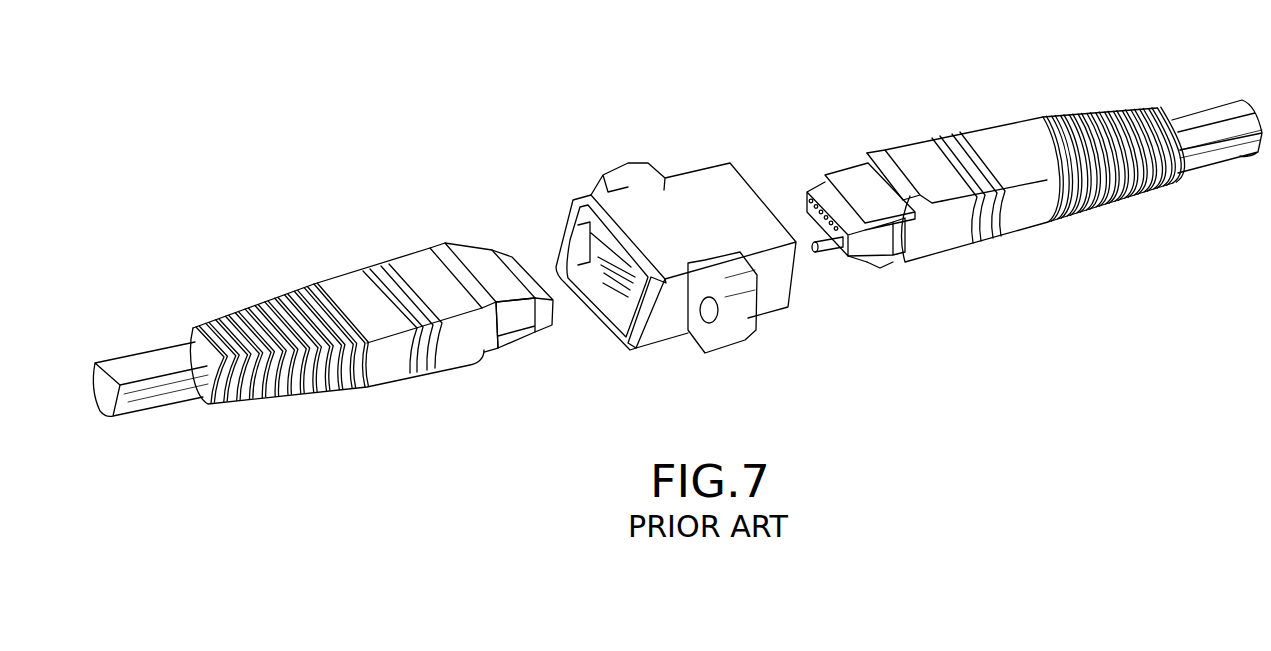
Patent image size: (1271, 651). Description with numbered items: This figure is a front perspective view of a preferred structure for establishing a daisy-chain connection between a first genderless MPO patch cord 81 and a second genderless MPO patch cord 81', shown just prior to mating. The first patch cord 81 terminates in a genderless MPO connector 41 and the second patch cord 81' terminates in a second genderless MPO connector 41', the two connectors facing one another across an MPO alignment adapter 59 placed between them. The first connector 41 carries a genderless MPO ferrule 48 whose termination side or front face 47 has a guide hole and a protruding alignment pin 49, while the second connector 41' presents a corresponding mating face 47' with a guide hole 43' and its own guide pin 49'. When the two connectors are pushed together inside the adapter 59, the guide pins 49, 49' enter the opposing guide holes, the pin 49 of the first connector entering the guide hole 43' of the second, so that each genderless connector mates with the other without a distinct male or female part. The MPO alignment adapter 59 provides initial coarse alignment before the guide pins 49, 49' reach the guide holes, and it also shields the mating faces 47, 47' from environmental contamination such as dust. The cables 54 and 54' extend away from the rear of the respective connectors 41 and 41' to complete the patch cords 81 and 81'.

The genderless MPO connector 41 is at (337, 230).
The genderless MPO connector 41' is at (1012, 116).
The guide hole 43' is at (855, 178).
The front face 47 is at (555, 324).
The mating face 47' is at (787, 179).
The genderless MPO ferrule 48 is at (514, 327).
The alignment pin 49 is at (490, 237).
The guide pin 49' is at (851, 304).
The fiber optic cable 54 is at (150, 339).
The fiber optic cable 54' is at (1217, 104).
The MPO alignment adapter 59 is at (672, 150).
The genderless MPO patch cord 81 is at (344, 372).
The genderless MPO patch cord 81' is at (1026, 242).